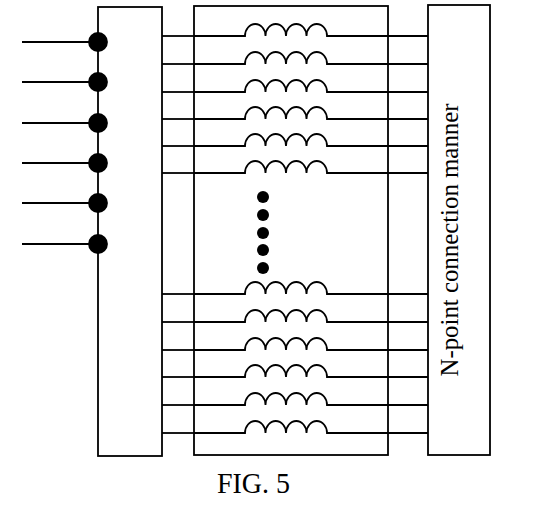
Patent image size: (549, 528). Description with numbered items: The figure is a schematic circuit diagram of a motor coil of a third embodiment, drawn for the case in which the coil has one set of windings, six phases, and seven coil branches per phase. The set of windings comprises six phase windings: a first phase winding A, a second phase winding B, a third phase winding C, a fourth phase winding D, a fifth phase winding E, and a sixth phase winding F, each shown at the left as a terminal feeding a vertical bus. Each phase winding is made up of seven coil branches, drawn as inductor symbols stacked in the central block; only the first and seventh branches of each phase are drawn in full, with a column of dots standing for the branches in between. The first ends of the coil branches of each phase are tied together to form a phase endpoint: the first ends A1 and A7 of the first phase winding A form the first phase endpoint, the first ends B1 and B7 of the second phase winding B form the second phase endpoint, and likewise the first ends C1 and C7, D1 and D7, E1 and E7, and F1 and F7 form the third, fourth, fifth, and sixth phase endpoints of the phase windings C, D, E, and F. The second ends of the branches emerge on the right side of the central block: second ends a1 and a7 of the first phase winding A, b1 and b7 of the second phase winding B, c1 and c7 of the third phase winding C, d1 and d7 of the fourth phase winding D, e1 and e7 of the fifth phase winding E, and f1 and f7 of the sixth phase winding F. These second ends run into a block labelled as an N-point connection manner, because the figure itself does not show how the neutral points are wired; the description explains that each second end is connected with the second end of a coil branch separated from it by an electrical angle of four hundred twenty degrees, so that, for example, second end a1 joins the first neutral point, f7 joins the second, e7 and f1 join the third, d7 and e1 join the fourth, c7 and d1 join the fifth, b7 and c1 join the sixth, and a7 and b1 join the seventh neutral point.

The first phase winding A is at (64, 39).
The second phase winding B is at (64, 79).
The third phase winding C is at (64, 120).
The fourth phase winding D is at (64, 160).
The fifth phase winding E is at (64, 200).
The sixth phase winding F is at (64, 241).
The first end of first coil branch of first phase winding A1 is at (275, 28).
The first end of first coil branch of second phase winding B1 is at (275, 56).
The first end of first coil branch of third phase winding C1 is at (275, 84).
The first end of first coil branch of fourth phase winding D1 is at (275, 111).
The first end of first coil branch of fifth phase winding E1 is at (275, 138).
The first end of first coil branch of sixth phase winding F1 is at (275, 165).
The second end of first coil branch of first phase winding a1 is at (390, 28).
The second end of first coil branch of second phase winding b1 is at (390, 56).
The second end of first coil branch of third phase winding c1 is at (390, 84).
The second end of first coil branch of fourth phase winding d1 is at (390, 111).
The second end of first coil branch of fifth phase winding e1 is at (390, 138).
The second end of first coil branch of sixth phase winding f1 is at (390, 165).
The first end of seventh coil branch of first phase winding A7 is at (275, 286).
The first end of seventh coil branch of second phase winding B7 is at (275, 314).
The first end of seventh coil branch of third phase winding C7 is at (275, 342).
The first end of seventh coil branch of fourth phase winding D7 is at (275, 369).
The first end of seventh coil branch of fifth phase winding E7 is at (275, 397).
The first end of seventh coil branch of sixth phase winding F7 is at (275, 425).
The second end of seventh coil branch of first phase winding a7 is at (390, 286).
The second end of seventh coil branch of second phase winding b7 is at (390, 314).
The second end of seventh coil branch of third phase winding c7 is at (390, 342).
The second end of seventh coil branch of fourth phase winding d7 is at (390, 369).
The second end of seventh coil branch of fifth phase winding e7 is at (390, 397).
The second end of seventh coil branch of sixth phase winding f7 is at (390, 425).